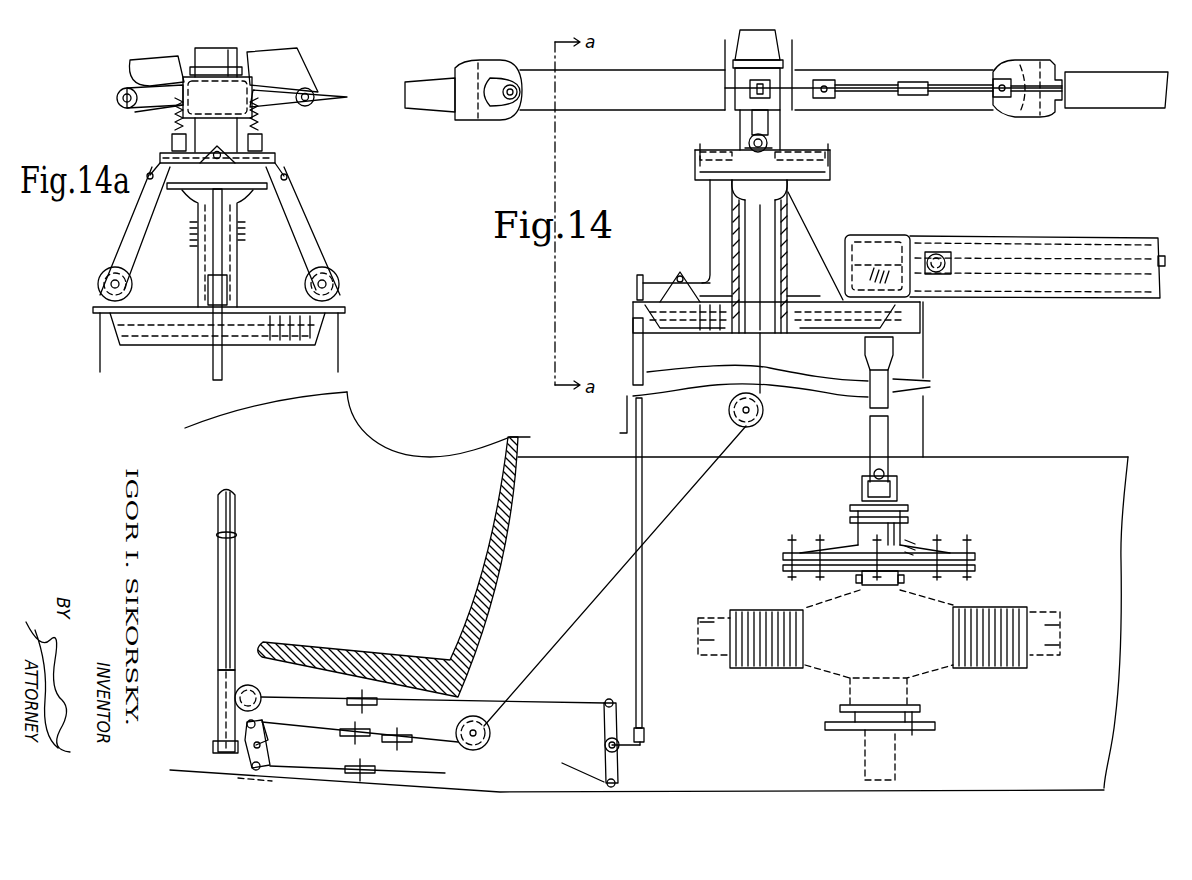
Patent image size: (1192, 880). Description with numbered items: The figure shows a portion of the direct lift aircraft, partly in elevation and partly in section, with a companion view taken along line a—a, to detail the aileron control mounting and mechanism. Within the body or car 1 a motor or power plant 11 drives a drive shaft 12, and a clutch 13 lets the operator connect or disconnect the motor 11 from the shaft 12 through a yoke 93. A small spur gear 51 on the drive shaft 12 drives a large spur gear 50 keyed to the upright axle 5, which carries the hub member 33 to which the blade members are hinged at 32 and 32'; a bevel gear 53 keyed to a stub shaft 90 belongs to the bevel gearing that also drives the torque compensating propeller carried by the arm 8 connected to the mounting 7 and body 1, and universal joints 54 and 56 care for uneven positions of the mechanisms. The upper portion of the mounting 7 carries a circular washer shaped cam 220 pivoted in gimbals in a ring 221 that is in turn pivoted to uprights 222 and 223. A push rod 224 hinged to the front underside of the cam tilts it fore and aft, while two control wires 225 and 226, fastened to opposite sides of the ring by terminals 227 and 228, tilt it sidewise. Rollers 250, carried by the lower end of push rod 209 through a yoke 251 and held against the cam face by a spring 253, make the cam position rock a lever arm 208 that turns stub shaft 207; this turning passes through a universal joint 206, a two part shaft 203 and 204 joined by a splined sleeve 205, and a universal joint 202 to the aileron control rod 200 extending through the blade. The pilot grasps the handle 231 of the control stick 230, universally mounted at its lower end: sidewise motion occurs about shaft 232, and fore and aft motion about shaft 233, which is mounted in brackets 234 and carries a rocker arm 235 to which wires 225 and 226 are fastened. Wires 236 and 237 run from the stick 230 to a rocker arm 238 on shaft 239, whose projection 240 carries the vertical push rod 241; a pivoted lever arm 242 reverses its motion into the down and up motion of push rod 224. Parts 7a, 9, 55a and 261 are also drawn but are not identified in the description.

In FIG. 14, the body or car 1 is at (1075, 440).
In FIG. 14, the upright axle 5 is at (815, 246).
In FIG. 14, the mounting 7 is at (763, 236).
In FIG. 14, the shaft housing 7a is at (700, 334).
In FIG. 14, the arm 8 is at (1078, 240).
In FIG. 14, the tail drive connection 9 is at (1163, 262).
In FIG. 14, the motor or power plant 11 is at (925, 612).
In FIG. 14, the drive shaft 12 is at (888, 424).
In FIG. 14, the clutch 13 is at (905, 548).
In FIG. 14, the hinge 32 is at (463, 104).
In FIG. 14, the hinge 32' is at (1080, 75).
In FIG. 14, the hub member 33 is at (578, 80).
In FIG. 14, the spur gear 50 is at (672, 334).
In FIG. 14, the spur gear 51 is at (897, 316).
In FIG. 14, the bevel gear 53 is at (915, 240).
In FIG. 14, the universal joint 54 is at (890, 490).
In FIG. 14, the universal joint 55a is at (886, 353).
In FIG. 14, the universal joint 56 is at (952, 255).
In FIG. 14, the stub shaft 90 is at (870, 262).
In FIG. 14, the yoke 93 is at (860, 505).
In FIG. 14, the aileron control rod 200 is at (1052, 92).
In FIG. 14, the universal joint 202 is at (1000, 100).
In FIG. 14, the shaft part 203 is at (960, 96).
In FIG. 14, the shaft part 204 is at (870, 95).
In FIG. 14, the splined sleeve member 205 is at (912, 97).
In FIG. 14, the universal joint 206 is at (833, 87).
In FIG. 14A, the stub shaft 207 is at (121, 97).
In FIG. 14, the stub shaft 207 is at (772, 84).
In FIG. 14A, the lever arm 208 is at (150, 86).
In FIG. 14A, the push rod 209 is at (176, 108).
In FIG. 14, the circular washer shaped cam 220 is at (746, 148).
In FIG. 14A, the ring 221 is at (282, 170).
In FIG. 14, the ring 221 is at (832, 166).
In FIG. 14, the upright 222 is at (695, 165).
In FIG. 14, the upright 223 is at (832, 179).
In FIG. 14, the push rod 224 is at (708, 257).
In FIG. 14A, the control wire 225 is at (118, 247).
In FIG. 14, the control wire 225 is at (761, 354).
In FIG. 14A, the control wire 226 is at (308, 233).
In FIG. 14, the control wire 226 is at (346, 746).
In FIG. 14A, the terminal 227 is at (150, 180).
In FIG. 14A, the terminal 228 is at (287, 181).
In FIG. 14, the control stick 230 is at (236, 578).
In FIG. 14, the handle 231 is at (237, 515).
In FIG. 14, the shaft 232 is at (216, 744).
In FIG. 14, the shaft 233 is at (247, 752).
In FIG. 14, the brackets 234 is at (270, 742).
In FIG. 14, the rocker arm 235 is at (282, 768).
In FIG. 14, the wire 236 is at (293, 698).
In FIG. 14, the wire 237 is at (575, 769).
In FIG. 14, the rocker arm 238 is at (606, 728).
In FIG. 14, the shaft 239 is at (622, 762).
In FIG. 14, the projection 240 is at (645, 745).
In FIG. 14A, the push rod 241 is at (223, 365).
In FIG. 14, the push rod 241 is at (638, 318).
In FIG. 14, the pivoted lever arm 242 is at (660, 282).
In FIG. 14A, the rollers 250 is at (277, 158).
In FIG. 14, the rollers 250 is at (769, 144).
In FIG. 14A, the yoke 251 is at (265, 143).
In FIG. 14A, the spring 253 is at (262, 120).
In FIG. 14, the block 261 is at (772, 128).